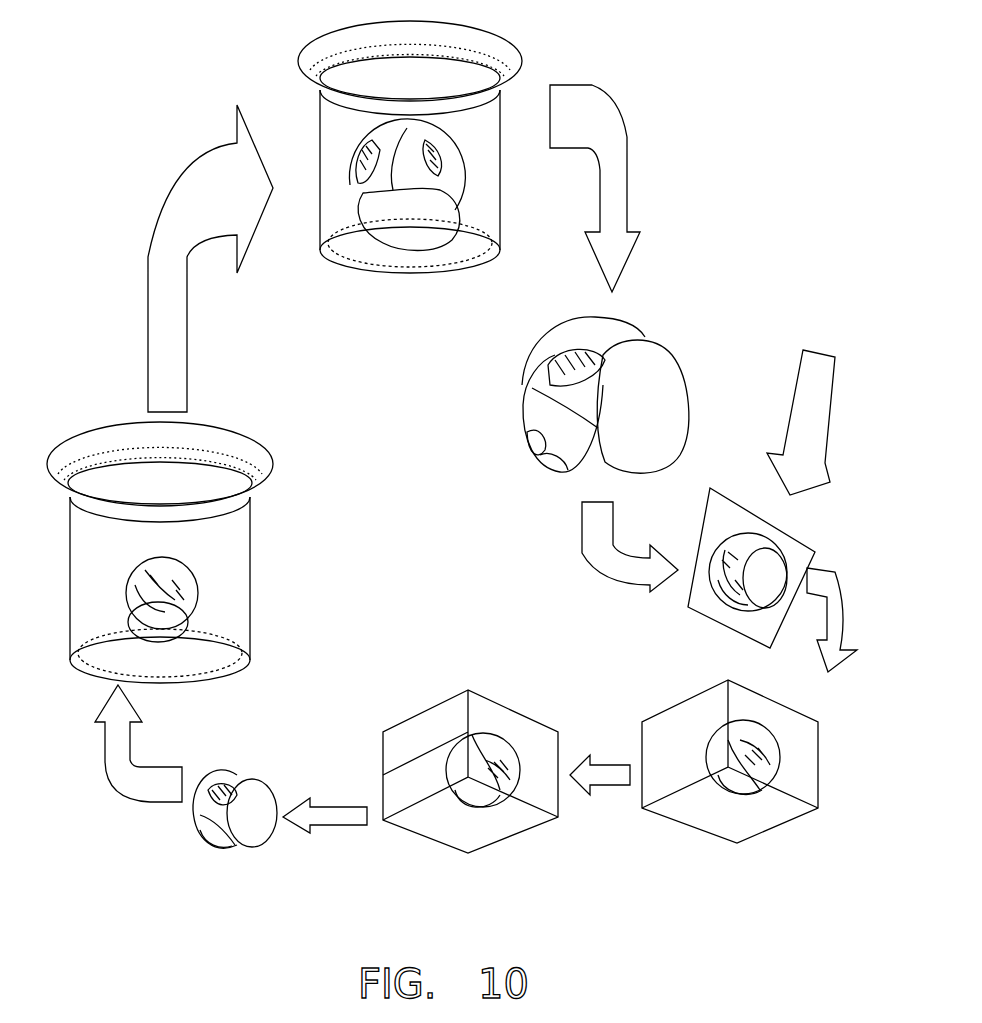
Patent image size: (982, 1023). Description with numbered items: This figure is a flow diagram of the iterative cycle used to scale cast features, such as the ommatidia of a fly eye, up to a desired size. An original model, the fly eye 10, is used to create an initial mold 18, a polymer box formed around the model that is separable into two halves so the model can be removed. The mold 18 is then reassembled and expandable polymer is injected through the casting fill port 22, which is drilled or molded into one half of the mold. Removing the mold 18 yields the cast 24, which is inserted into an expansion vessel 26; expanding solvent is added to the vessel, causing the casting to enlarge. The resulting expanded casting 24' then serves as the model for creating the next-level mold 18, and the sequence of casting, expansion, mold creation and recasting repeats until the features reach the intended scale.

The fly eye 10 is at (768, 555).
The mold 18 is at (678, 700).
The casting fill port 22 is at (736, 510).
The cast 24 is at (355, 702).
The expanded casting 24' is at (545, 296).
The expansion vessel 26 is at (251, 535).